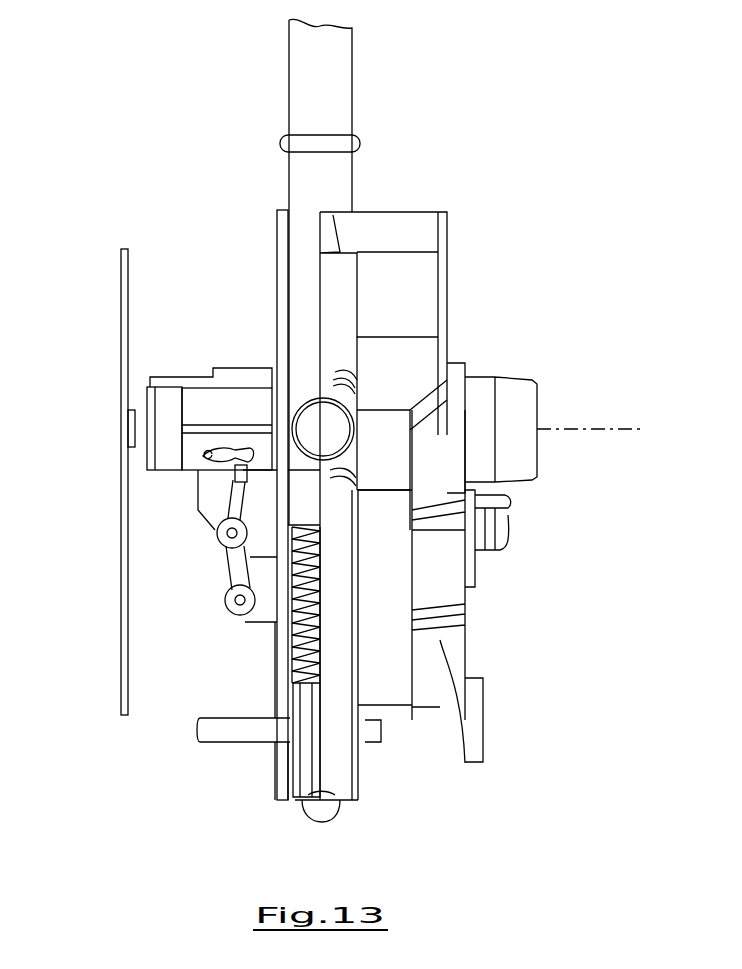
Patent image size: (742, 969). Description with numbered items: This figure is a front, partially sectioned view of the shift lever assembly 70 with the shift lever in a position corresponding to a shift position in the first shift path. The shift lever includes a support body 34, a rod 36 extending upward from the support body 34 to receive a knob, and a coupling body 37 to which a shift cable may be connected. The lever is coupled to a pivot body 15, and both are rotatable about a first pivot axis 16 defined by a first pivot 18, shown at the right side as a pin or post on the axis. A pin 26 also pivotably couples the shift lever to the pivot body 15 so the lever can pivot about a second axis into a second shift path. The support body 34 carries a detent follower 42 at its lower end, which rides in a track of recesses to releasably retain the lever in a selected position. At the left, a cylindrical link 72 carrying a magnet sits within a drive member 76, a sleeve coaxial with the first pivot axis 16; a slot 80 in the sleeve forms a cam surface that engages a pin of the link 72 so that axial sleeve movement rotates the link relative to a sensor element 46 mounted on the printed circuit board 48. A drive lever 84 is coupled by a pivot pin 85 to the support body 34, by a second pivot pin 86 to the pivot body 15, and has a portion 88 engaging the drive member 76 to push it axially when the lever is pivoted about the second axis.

The pivot body 15 is at (256, 372).
The first pivot axis 16 is at (566, 432).
The first pivot 18 is at (500, 383).
The pin 26 is at (330, 423).
The support body 34 is at (276, 212).
The rod 36 is at (352, 110).
The coupling body 37 is at (414, 215).
The detent follower 42 is at (290, 802).
The sensor element 46 is at (132, 410).
The printed circuit board 48 is at (112, 300).
The shift lever assembly 70 is at (471, 122).
The link 72 is at (159, 394).
The drive member 76 is at (213, 405).
The slot 80 is at (215, 452).
The drive lever 84 is at (240, 615).
The pivot pin 85 is at (238, 602).
The pivot pin 86 is at (230, 535).
The portion 88 is at (240, 476).